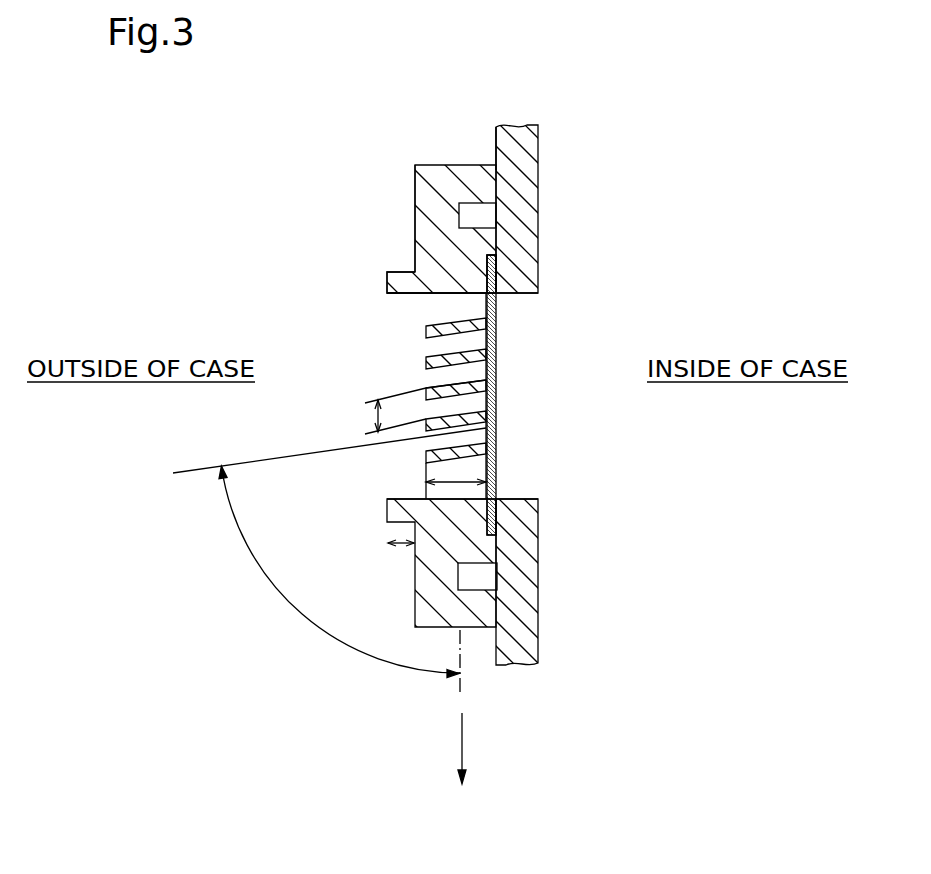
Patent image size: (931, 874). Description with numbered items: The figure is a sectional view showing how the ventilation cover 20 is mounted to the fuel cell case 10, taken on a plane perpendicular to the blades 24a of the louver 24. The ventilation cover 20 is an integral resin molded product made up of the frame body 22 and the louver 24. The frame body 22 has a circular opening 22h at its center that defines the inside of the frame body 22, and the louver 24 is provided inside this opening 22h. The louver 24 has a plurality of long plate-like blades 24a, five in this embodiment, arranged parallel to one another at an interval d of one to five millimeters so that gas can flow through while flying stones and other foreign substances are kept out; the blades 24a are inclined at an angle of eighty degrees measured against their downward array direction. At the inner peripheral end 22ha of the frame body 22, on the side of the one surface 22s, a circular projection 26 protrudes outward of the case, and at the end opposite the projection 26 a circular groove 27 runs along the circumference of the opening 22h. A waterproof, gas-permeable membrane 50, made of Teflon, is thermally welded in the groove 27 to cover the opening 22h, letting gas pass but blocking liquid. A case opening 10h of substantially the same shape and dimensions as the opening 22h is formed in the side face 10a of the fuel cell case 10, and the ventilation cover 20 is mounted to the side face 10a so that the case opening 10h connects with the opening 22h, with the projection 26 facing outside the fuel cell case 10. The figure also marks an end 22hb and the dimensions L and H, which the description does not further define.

The fuel cell case 10 is at (465, 410).
The side face 10a is at (493, 133).
The case opening 10h is at (513, 499).
The ventilation cover 20 is at (465, 410).
The frame body 22 is at (465, 410).
The one surface 22s is at (415, 232).
The opening 22h is at (424, 497).
The end 22ha is at (397, 295).
The inner surface of hole 22hb is at (487, 300).
The louver 24 is at (475, 410).
The blades 24a is at (399, 394).
The projection 26 is at (386, 290).
The groove 27 is at (497, 243).
The waterproof, gas-permeable membrane 50 is at (498, 402).
The interval d is at (378, 414).
The fin length L is at (468, 481).
The step height H is at (398, 548).